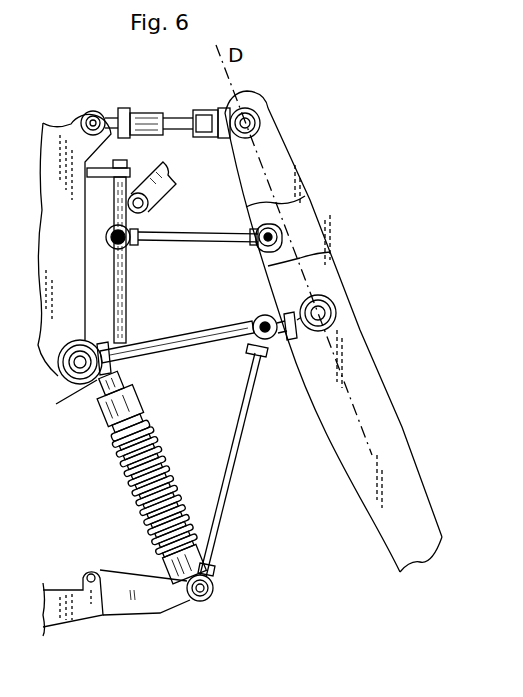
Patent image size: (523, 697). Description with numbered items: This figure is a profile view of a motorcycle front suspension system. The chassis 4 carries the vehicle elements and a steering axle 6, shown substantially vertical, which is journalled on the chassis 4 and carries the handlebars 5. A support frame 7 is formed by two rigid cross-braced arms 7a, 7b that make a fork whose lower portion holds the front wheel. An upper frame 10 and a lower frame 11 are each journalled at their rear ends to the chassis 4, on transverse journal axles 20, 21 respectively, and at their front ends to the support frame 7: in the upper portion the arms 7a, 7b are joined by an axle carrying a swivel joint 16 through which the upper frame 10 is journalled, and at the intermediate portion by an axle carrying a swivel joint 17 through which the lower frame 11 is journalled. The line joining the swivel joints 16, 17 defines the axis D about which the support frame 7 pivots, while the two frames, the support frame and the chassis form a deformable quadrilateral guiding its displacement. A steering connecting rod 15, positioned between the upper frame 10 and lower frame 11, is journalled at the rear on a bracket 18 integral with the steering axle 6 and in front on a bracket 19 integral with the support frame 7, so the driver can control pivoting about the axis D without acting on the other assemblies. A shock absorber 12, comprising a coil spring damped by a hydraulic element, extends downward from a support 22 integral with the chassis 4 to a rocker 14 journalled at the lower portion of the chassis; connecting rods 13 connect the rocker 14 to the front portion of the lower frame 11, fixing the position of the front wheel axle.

The chassis 4 is at (70, 118).
The handlebars 5 is at (165, 207).
The steering axle 6 is at (138, 290).
The support frame 7 is at (312, 192).
The rigid cross-braced arm 7a is at (292, 190).
The rigid cross-braced arm 7b is at (317, 237).
The upper frame 10 is at (175, 112).
The lower frame 11 is at (215, 323).
The shock absorber 12 is at (125, 485).
The connecting rods 13 is at (236, 470).
The rocker 14 is at (158, 606).
The steering connecting rod 15 is at (210, 246).
The swivel joint 16 is at (257, 116).
The swivel joint 17 is at (337, 306).
The bracket 18 is at (108, 243).
The bracket 19 is at (268, 250).
The transverse journal axle 20 is at (108, 93).
The transverse journal axle 21 is at (69, 374).
The support 22 is at (92, 394).